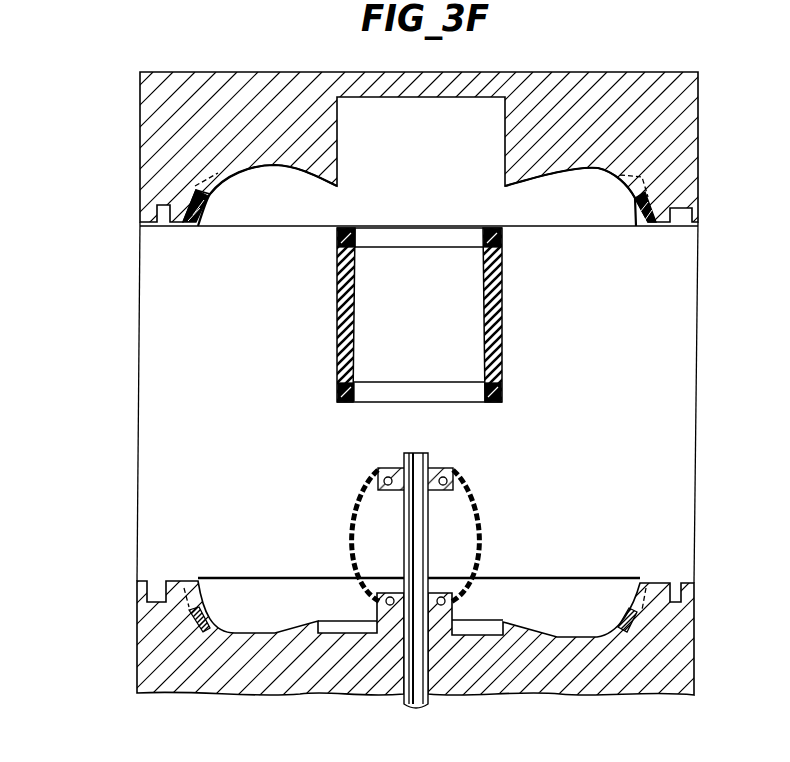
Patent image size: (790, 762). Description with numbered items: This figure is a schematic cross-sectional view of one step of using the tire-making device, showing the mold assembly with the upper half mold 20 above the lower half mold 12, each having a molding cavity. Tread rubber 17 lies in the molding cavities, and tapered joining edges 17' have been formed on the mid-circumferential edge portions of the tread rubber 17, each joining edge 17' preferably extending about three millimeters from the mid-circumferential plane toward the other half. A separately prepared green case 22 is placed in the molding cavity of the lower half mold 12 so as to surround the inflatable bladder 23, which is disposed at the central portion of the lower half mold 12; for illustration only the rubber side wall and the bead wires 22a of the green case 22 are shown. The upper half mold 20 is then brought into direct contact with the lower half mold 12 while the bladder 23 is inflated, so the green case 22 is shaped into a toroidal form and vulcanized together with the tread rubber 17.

The upper half mold 20 is at (150, 190).
The lower half mold 12 is at (146, 634).
The tread rubber 17 is at (419, 411).
The tapered joining edges 17' is at (435, 391).
The green case 22 is at (503, 338).
The bead wires 22a is at (503, 234).
The inflatable bladder 23 is at (478, 528).